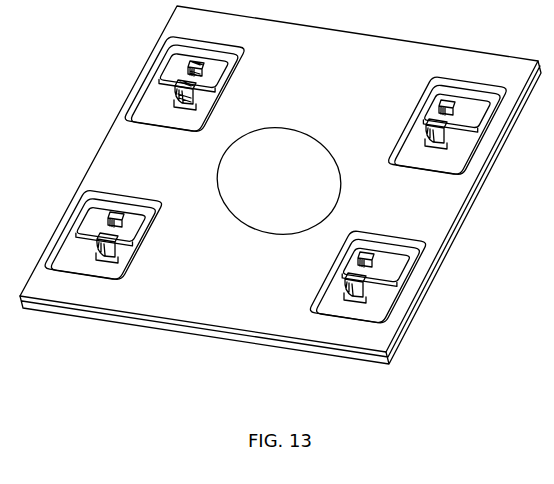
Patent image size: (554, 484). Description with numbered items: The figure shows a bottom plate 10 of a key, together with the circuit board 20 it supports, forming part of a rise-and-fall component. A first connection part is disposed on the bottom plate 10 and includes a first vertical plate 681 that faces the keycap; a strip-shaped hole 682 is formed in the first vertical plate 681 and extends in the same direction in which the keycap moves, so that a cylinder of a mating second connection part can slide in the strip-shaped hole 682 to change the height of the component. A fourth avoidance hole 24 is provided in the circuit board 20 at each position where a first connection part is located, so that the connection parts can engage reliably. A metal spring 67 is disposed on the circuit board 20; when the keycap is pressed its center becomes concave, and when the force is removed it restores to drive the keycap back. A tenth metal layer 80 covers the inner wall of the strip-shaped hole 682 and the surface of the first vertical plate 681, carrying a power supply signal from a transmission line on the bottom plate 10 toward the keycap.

The bottom plate 10 is at (420, 302).
The circuit board 20 is at (440, 217).
The fourth avoidance hole 24 is at (330, 305).
The metal spring 67 is at (309, 181).
The tenth metal layer 80 is at (200, 83).
The first vertical plate 681 is at (123, 219).
The strip-shaped hole 682 is at (127, 238).